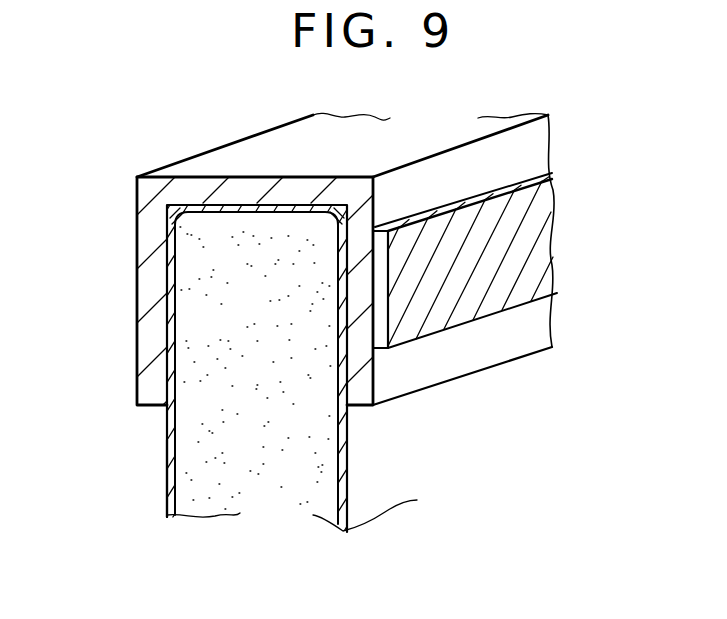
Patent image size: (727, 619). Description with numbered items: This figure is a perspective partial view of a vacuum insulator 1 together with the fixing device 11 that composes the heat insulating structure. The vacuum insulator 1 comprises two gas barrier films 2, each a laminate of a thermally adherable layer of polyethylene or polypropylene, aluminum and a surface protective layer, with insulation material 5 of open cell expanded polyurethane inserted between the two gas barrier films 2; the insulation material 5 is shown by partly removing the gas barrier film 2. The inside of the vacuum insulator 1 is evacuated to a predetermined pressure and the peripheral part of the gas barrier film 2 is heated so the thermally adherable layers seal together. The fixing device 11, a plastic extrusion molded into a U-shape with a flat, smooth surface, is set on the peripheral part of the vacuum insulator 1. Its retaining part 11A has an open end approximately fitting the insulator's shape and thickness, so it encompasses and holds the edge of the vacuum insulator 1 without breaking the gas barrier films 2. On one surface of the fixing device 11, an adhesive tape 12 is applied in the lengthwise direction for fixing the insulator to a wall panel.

The vacuum insulator 1 is at (331, 340).
The gas barrier film 2 is at (167, 448).
The insulation material 5 is at (252, 478).
The fixing device 11 is at (136, 238).
The retaining part 11A is at (166, 290).
The adhesive tape 12 is at (530, 243).